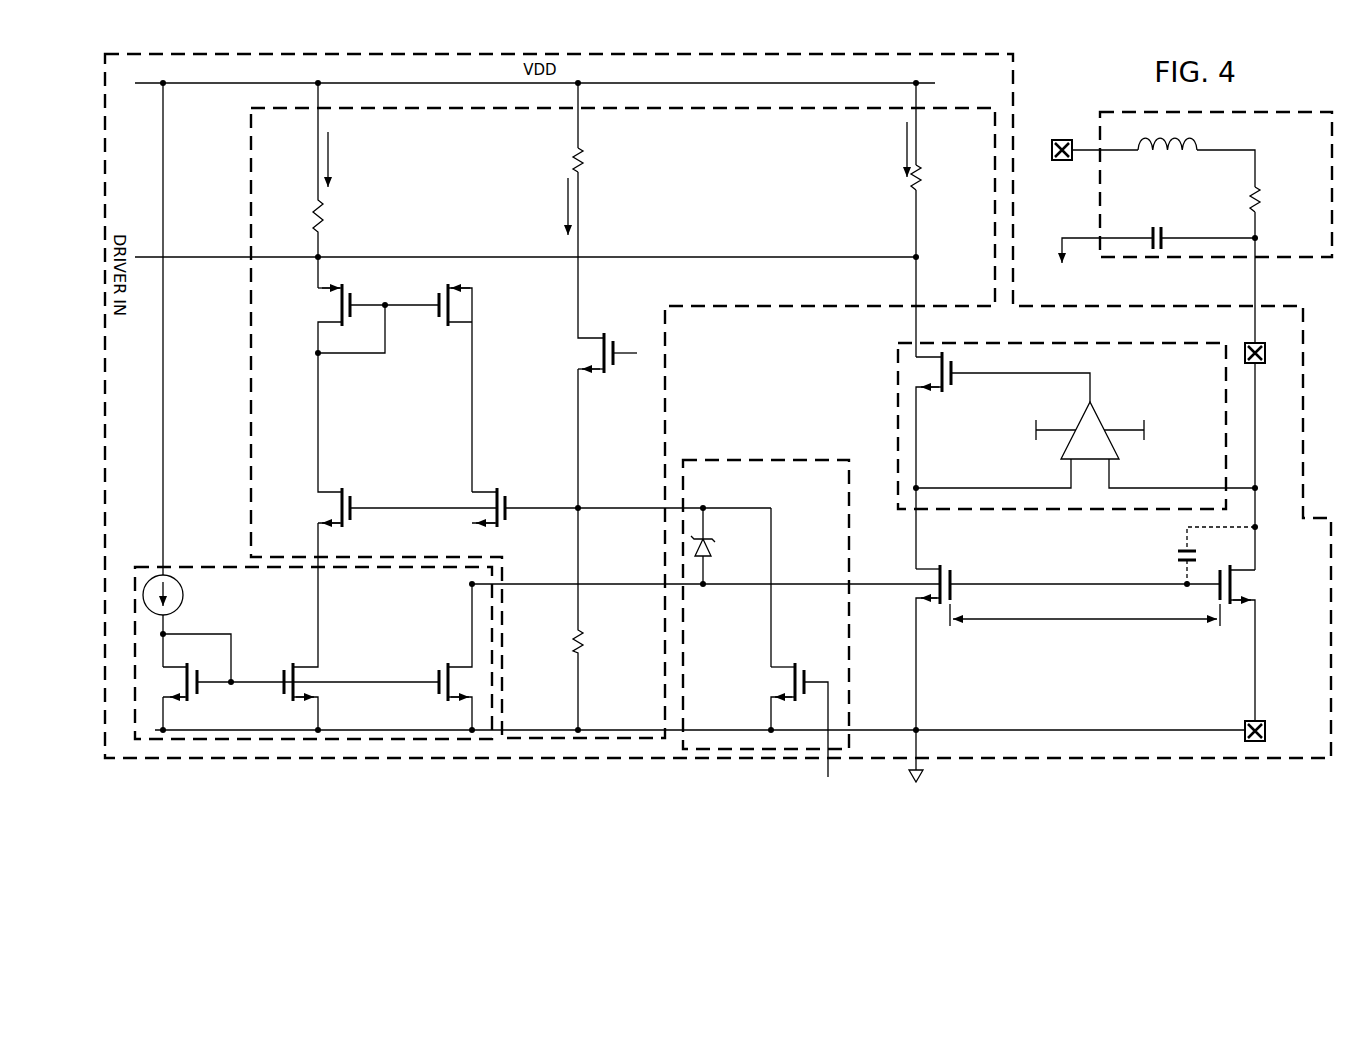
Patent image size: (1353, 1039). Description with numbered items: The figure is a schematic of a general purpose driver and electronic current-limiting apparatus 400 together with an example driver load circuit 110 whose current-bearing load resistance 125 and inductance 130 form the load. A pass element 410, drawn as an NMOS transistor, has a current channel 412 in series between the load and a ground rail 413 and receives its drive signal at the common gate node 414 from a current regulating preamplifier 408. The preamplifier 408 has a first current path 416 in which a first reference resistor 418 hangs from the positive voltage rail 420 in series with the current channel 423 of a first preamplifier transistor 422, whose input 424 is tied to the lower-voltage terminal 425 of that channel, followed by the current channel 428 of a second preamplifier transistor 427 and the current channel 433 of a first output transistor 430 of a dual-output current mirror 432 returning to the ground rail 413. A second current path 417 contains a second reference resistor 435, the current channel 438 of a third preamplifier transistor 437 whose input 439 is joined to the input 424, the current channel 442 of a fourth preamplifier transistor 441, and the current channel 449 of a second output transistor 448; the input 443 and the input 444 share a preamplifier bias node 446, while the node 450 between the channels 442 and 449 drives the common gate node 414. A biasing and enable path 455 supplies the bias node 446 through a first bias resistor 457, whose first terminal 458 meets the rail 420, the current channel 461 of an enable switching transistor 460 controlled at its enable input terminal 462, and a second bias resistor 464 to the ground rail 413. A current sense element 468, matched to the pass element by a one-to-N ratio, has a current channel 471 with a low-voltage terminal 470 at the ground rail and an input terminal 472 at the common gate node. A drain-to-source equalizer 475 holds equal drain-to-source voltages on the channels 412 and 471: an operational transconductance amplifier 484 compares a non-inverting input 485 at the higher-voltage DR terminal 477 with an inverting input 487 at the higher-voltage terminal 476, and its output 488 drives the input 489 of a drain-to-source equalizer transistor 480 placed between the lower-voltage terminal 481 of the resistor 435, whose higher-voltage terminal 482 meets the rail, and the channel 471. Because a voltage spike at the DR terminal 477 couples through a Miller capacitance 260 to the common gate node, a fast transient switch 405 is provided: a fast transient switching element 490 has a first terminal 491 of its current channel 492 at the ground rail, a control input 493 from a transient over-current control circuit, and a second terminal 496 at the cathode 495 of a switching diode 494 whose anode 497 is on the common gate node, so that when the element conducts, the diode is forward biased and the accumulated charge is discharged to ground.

The driver load circuit 110 is at (1262, 110).
The load resistance 125 is at (1261, 200).
The inductance 130 is at (1196, 128).
The Miller capacitance 260 is at (1182, 553).
The driver and electronic current-limiting apparatus 400 is at (1182, 762).
The fast transient switch 405 is at (803, 457).
The current regulating preamplifier 408 is at (248, 203).
The pass element 410 is at (1215, 640).
The current channel 412 is at (1240, 590).
The ground rail 413 is at (1070, 728).
The input terminal (common gate node, CGN) 414 is at (1072, 584).
The first current path 416 is at (334, 152).
The second current path 417 is at (905, 145).
The first reference resistor 418 is at (323, 216).
The positive voltage rail 420 is at (215, 86).
The first preamplifier transistor 422 is at (352, 270).
The current channel 423 is at (338, 300).
The input 424 is at (368, 302).
The lower-voltage terminal 425 is at (330, 328).
The second preamplifier transistor 427 is at (352, 478).
The current channel 428 is at (338, 504).
The first output transistor 430 is at (284, 655).
The dual-output current mirror 432 is at (210, 563).
The current channel 433 is at (300, 675).
The second reference resistor 435 is at (922, 178).
The third preamplifier transistor 437 is at (438, 270).
The current channel 438 is at (456, 300).
The input 439 is at (414, 308).
The fourth preamplifier transistor 441 is at (507, 478).
The current channel 442 is at (494, 504).
The input 443 is at (532, 504).
The input 444 is at (378, 504).
The preamplifier bias node 446 is at (576, 513).
The second output transistor 448 is at (433, 655).
The current channel 449 is at (448, 697).
The node 450 is at (468, 584).
The biasing and enable path 455 is at (566, 205).
The first bias resistor 457 is at (572, 160).
The first terminal 458 is at (582, 118).
The enable switching transistor 460 is at (610, 378).
The current channel 461 is at (600, 350).
The enable (EN) input terminal 462 is at (616, 352).
The second bias resistor 464 is at (574, 652).
The current sense element 468 is at (904, 606).
The low-voltage terminal 470 is at (930, 606).
The current channel 471 is at (936, 578).
The input terminal 472 is at (974, 586).
The drain-to-source equalizer 475 is at (895, 385).
The higher-voltage terminal 476 is at (932, 570).
The higher-voltage terminal (DR terminal) 477 is at (1258, 557).
The drain-to-source equalizer transistor 480 is at (965, 404).
The lower-voltage terminal 481 is at (920, 218).
The higher-voltage terminal 482 is at (922, 97).
The operational transconductance amplifier (OTA) 484 is at (1097, 416).
The non-inverting input 485 is at (1120, 476).
The inverting input 487 is at (1068, 476).
The output 488 is at (1088, 400).
The input 489 is at (948, 405).
The fast transient switching element 490 is at (760, 640).
The first terminal 491 is at (786, 700).
The current channel 492 is at (790, 676).
The control input 493 is at (816, 682).
The switching diode 494 is at (758, 526).
The cathode 495 is at (708, 530).
The second terminal 496 is at (784, 662).
The anode 497 is at (711, 548).